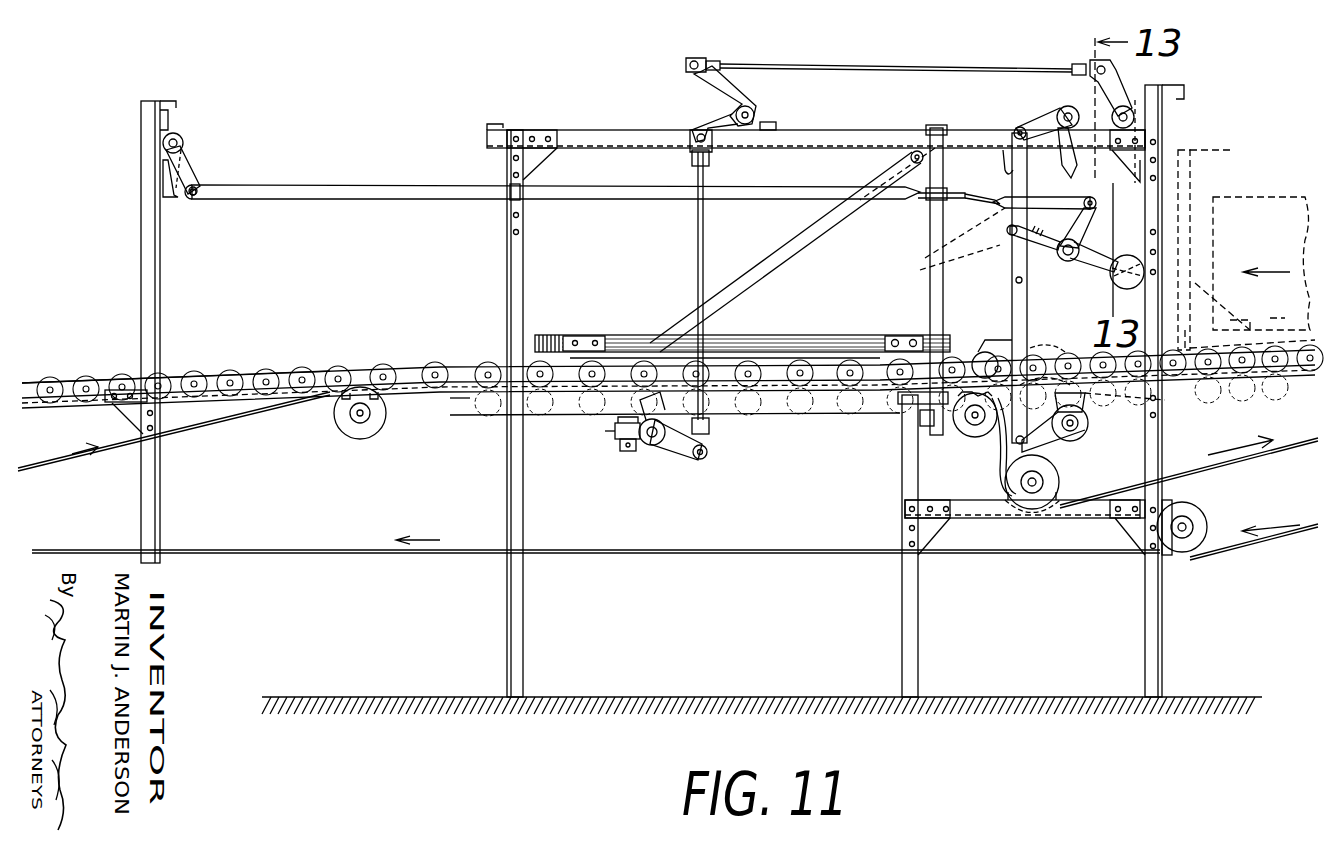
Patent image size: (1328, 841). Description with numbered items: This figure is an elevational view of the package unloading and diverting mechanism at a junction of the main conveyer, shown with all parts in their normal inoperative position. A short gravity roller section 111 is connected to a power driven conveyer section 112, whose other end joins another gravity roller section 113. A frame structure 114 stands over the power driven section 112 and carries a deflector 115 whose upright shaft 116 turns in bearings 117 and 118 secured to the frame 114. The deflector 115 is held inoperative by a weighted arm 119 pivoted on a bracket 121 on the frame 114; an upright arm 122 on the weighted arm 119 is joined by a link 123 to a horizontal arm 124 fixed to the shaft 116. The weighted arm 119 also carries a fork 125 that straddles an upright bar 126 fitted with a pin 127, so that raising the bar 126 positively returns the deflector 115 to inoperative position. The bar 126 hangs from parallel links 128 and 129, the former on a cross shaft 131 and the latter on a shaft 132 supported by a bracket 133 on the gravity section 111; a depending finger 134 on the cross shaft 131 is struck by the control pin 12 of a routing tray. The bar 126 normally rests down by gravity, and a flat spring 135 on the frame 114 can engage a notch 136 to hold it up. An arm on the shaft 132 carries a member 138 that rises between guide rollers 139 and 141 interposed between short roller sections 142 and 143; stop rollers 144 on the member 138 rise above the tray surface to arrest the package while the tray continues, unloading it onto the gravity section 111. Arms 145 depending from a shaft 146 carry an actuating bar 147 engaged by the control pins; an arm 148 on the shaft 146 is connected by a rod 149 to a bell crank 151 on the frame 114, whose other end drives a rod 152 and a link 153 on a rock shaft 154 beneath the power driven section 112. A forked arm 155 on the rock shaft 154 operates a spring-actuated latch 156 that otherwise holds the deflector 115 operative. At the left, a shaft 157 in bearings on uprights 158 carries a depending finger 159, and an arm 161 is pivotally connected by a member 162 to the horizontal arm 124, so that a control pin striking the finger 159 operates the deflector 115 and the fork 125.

The control pin 12 is at (1195, 162).
The gravity roller section 111 is at (1293, 375).
The power driven conveyer section 112 is at (415, 382).
The gravity roller section 113 is at (213, 386).
The frame structure 114 is at (612, 130).
The deflector 115 is at (780, 335).
The upright shaft 116 is at (878, 235).
The bearing 117 is at (945, 130).
The bearing 118 is at (920, 420).
The weighted arm 119 is at (1077, 262).
The bracket 121 is at (1128, 247).
The upright arm 122 is at (1090, 230).
The link 123 is at (1040, 200).
The horizontal arm 124 is at (930, 198).
The fork 125 is at (1015, 235).
The upright bar 126 is at (945, 278).
The pin 127 is at (1015, 283).
The link 128 is at (1030, 128).
The link 129 is at (1055, 470).
The cross shaft 131 is at (1062, 105).
The shaft 132 is at (1086, 428).
The bracket 133 is at (1085, 405).
The depending finger 134 is at (1065, 140).
The flat spring 135 is at (1003, 162).
The notch 136 is at (935, 253).
The member 138 is at (1000, 470).
The guide roller 139 is at (1100, 395).
The guide roller 141 is at (970, 420).
The short roller section 142 is at (1042, 370).
The short roller section 143 is at (985, 348).
The stop rollers 144 is at (1042, 343).
The arm 145 is at (1160, 135).
The shaft 146 is at (1130, 113).
The actuating bar 147 is at (1140, 178).
The arm 148 is at (1115, 90).
The rod 149 is at (912, 66).
The bell crank 151 is at (735, 93).
The rod 152 is at (696, 244).
The link 153 is at (680, 450).
The rock shaft 154 is at (650, 440).
The forked arm 155 is at (613, 432).
The spring-actuated latch 156 is at (620, 447).
The shaft 157 is at (181, 140).
The uprights 158 is at (143, 148).
The depending finger 159 is at (173, 197).
The arm 161 is at (194, 178).
The member 162 is at (378, 200).